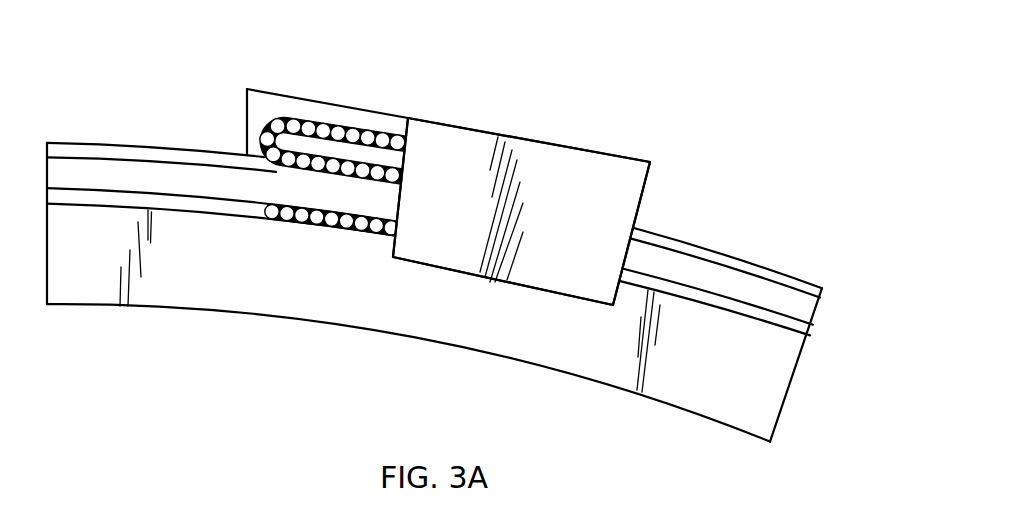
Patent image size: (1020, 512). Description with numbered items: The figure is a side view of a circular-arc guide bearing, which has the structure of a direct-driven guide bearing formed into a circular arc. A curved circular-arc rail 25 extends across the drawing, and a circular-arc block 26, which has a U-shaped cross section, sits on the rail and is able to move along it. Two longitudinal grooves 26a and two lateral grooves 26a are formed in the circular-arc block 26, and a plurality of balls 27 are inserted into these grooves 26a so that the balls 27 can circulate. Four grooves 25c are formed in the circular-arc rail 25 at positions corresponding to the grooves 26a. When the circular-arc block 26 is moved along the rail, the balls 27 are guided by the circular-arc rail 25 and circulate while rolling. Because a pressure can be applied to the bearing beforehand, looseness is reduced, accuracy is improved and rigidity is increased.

The circular-arc rail 25 is at (308, 303).
The grooves 25c is at (800, 333).
The circular-arc block 26 is at (635, 188).
The grooves 26a is at (347, 117).
The balls 27 is at (272, 124).